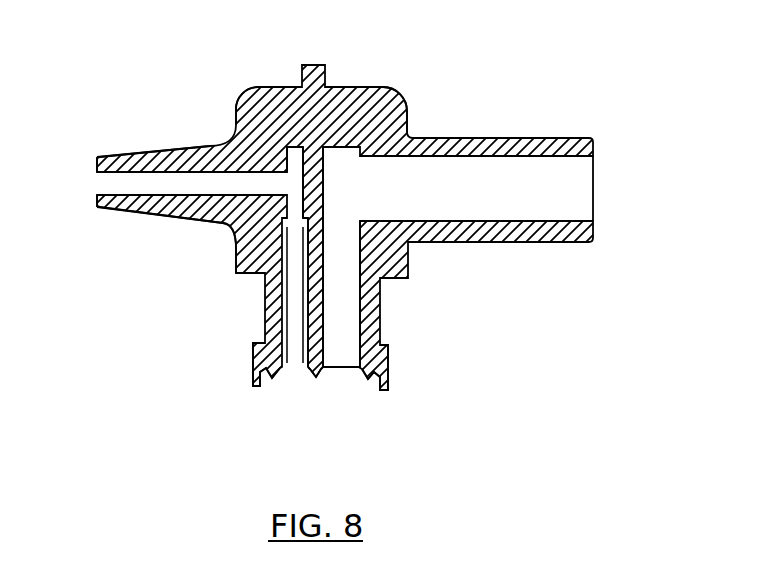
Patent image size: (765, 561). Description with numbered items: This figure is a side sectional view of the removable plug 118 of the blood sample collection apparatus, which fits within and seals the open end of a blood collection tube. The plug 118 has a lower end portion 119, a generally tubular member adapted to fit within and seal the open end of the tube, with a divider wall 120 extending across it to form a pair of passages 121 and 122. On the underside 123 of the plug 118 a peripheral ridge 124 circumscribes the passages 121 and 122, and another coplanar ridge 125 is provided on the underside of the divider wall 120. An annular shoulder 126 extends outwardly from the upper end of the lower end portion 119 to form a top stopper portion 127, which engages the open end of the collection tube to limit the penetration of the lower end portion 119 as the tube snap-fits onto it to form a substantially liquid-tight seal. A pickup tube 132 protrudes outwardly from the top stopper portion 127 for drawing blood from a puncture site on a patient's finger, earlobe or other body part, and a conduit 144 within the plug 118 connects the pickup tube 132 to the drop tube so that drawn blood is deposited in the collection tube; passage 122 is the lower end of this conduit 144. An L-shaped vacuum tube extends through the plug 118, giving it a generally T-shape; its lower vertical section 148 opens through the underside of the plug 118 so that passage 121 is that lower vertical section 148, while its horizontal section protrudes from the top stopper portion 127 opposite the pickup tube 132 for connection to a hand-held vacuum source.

The removable plug 118 is at (352, 88).
The pickup tube 132 is at (160, 154).
The top stopper portion 127 is at (374, 124).
The conduit 144 is at (288, 147).
The lower vertical section of the vacuum tube 148 is at (345, 240).
The lower end portion 119 is at (362, 298).
The divider wall 120 is at (322, 310).
The passage 121 is at (343, 343).
The annular shoulder 126 is at (252, 277).
The passage 122 is at (292, 311).
The peripheral ridge 124 is at (273, 381).
The coplanar ridge 125 is at (312, 378).
The underside 123 is at (361, 373).